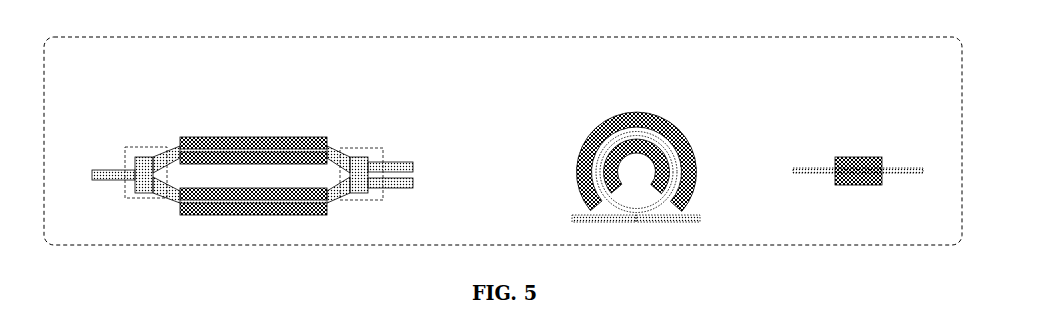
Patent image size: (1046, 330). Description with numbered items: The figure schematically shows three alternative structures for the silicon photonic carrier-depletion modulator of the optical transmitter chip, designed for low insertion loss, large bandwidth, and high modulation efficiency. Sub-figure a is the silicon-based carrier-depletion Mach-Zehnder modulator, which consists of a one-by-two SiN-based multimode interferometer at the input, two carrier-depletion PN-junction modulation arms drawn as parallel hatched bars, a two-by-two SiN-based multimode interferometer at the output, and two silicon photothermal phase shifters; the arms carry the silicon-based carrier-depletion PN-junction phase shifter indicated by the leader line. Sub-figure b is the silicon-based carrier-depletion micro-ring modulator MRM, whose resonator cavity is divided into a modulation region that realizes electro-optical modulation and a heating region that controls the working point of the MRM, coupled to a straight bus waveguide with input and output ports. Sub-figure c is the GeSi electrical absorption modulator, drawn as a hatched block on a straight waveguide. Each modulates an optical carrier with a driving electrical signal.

The silicon-based carrier-depletion MZM structure a is at (308, 136).
The silicon-based carrier-depletion MRM structure b is at (647, 159).
The GeSi EAM structure c is at (858, 173).
The silicon-based carrier-depletion micro-ring modulator MRM is at (573, 81).